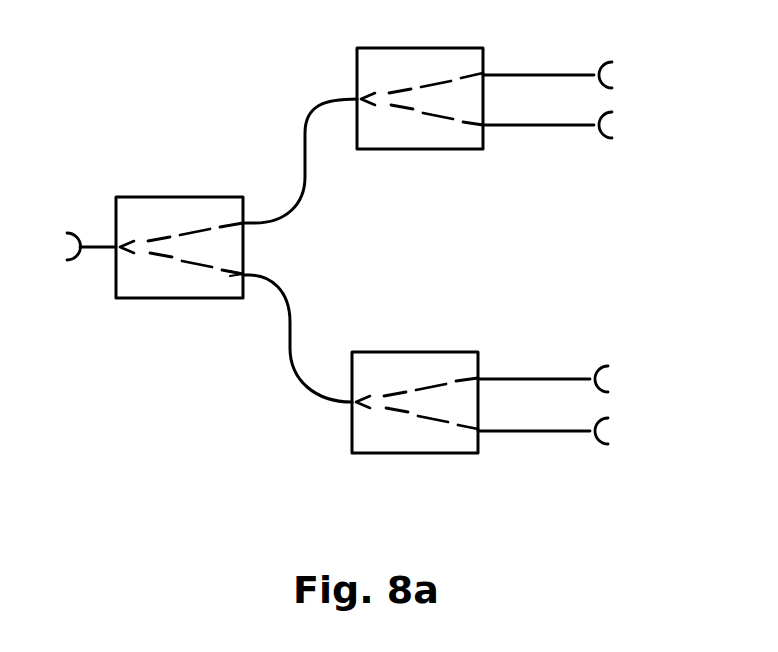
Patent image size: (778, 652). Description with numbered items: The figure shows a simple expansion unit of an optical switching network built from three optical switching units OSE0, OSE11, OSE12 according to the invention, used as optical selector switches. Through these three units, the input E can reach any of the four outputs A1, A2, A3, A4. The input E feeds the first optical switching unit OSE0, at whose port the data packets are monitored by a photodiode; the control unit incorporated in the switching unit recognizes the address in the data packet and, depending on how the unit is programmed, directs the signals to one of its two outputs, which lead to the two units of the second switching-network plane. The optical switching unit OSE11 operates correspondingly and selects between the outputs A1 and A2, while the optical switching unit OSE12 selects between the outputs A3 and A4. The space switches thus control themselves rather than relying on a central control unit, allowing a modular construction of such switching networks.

The optical switching unit OSE0 is at (166, 210).
The optical switching unit OSE11 is at (382, 73).
The optical switching unit OSE12 is at (415, 378).
The input E is at (66, 259).
The output A1 is at (608, 77).
The output A2 is at (606, 130).
The output A3 is at (603, 383).
The output A4 is at (602, 436).